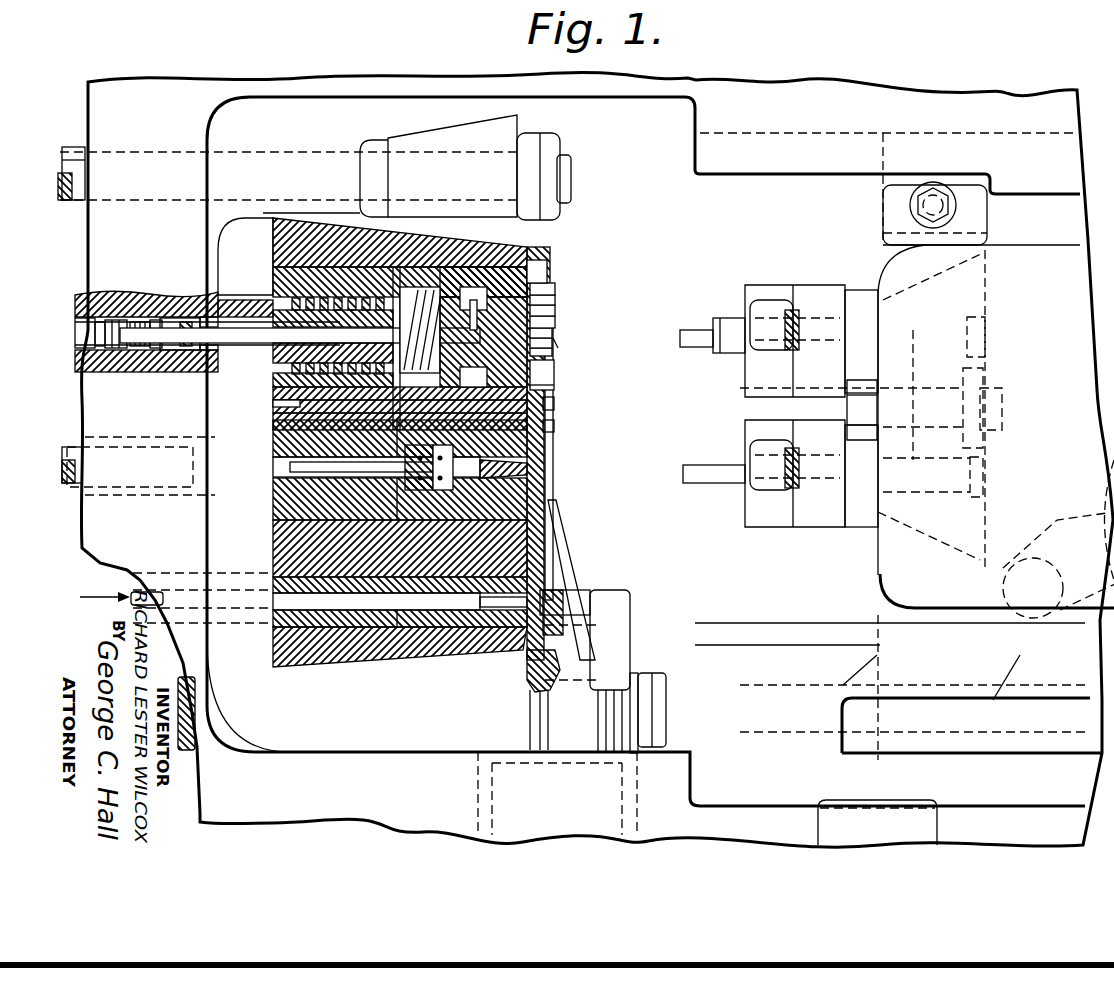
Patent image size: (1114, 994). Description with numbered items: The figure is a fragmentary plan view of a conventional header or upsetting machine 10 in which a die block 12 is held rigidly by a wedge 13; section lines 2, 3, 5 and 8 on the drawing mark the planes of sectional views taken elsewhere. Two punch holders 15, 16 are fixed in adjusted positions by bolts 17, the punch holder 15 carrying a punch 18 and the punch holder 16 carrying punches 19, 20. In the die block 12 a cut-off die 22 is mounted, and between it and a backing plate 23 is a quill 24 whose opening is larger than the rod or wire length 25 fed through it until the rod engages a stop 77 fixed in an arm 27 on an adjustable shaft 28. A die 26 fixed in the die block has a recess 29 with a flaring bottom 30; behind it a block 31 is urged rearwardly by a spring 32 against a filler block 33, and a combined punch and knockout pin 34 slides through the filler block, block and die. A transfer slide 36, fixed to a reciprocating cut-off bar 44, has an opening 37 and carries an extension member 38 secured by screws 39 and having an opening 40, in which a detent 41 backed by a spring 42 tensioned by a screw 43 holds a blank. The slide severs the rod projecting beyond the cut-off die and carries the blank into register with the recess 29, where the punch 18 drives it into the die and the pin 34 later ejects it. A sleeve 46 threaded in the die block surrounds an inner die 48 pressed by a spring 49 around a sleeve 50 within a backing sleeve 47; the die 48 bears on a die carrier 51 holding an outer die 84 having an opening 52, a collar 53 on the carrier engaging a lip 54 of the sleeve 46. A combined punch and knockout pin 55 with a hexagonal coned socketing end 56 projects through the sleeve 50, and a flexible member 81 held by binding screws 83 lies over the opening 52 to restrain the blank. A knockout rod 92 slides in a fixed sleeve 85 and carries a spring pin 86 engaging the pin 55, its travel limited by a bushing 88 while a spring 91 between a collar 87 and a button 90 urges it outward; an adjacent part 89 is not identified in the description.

The section line 2- 2 is at (730, 58).
The section line 3- 3 is at (628, 200).
The section line 5- 5 is at (128, 497).
The section line 8- 8 is at (53, 375).
The header or upsetting machine 10 is at (252, 68).
The die block 12 is at (300, 642).
The wedge 13 is at (400, 130).
The punch holder 15 is at (815, 513).
The punch holder 16 is at (810, 293).
The bolts 17 is at (913, 442).
The punch 18 is at (710, 484).
The punch 19 is at (687, 330).
The punch 20 is at (720, 355).
The cut-off die 22 is at (455, 620).
The backing plate 23 is at (250, 640).
The quill 24 is at (290, 605).
The rod or wire length 25 is at (385, 600).
The die 26 is at (500, 505).
The arm 27 is at (620, 634).
The shaft 28 is at (667, 720).
The recess 29 is at (530, 468).
The flaring bottom 30 is at (540, 445).
The block 31 is at (470, 440).
The spring 32 is at (470, 480).
The filler block 33 is at (283, 430).
The combined punch and knockout pin 34 is at (293, 463).
The slide 36 is at (540, 530).
The opening 37 is at (556, 470).
The extension member 38 is at (548, 370).
The screws 39 is at (556, 425).
The opening 40 is at (555, 343).
The detent 41 is at (550, 322).
The spring 42 is at (548, 311).
The screw 43 is at (548, 300).
The cut-off bar 44 is at (547, 727).
The sleeve 46 is at (420, 264).
The backing sleeve 47 is at (296, 262).
The inner die 48 is at (448, 290).
The spring 49 is at (318, 296).
The sleeve 50 is at (273, 360).
The die carrier 51 is at (550, 355).
The opening 52 is at (553, 336).
The collar 53 is at (498, 284).
The lip 54 is at (532, 280).
The combined punch and knockout pin 55 is at (300, 330).
The socketing end 56 is at (475, 264).
The stop 77 is at (557, 602).
The flexible member 81 is at (547, 288).
The binding screws 83 is at (548, 386).
The outer die 84 is at (598, 332).
The fixed sleeve 85 is at (150, 365).
The spring pin 86 is at (140, 330).
The collar 87 is at (168, 330).
The bushing 88 is at (167, 373).
The collar 89 is at (187, 367).
The button 90 is at (110, 330).
The spring 91 is at (125, 330).
The knockout rod 92 is at (83, 323).